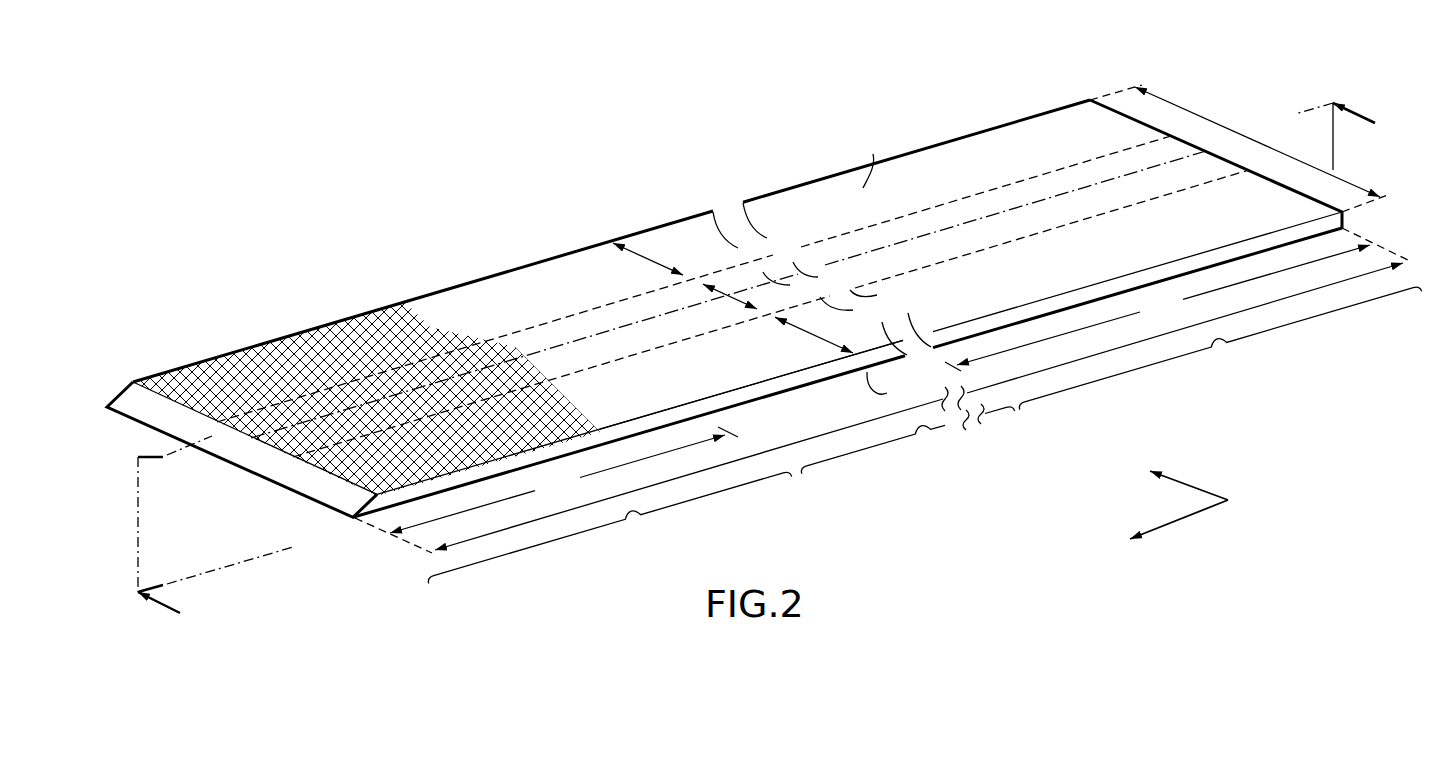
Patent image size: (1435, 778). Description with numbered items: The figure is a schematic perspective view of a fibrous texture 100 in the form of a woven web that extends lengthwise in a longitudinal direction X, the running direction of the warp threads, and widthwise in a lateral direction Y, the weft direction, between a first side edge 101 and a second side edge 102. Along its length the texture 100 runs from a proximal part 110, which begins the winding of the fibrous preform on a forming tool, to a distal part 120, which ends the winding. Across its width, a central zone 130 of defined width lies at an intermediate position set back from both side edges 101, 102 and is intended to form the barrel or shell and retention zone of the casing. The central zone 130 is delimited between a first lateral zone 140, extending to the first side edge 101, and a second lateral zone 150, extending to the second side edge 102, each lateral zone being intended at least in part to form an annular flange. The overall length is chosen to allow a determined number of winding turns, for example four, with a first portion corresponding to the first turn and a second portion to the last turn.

The fibrous texture 100 is at (470, 120).
The first side edge 101 is at (656, 425).
The second side edge 102 is at (437, 291).
The proximal part 110 is at (333, 521).
The distal part 120 is at (1078, 96).
The central zone 130 is at (657, 341).
The first lateral zone 140 is at (727, 373).
The second lateral zone 150 is at (578, 295).